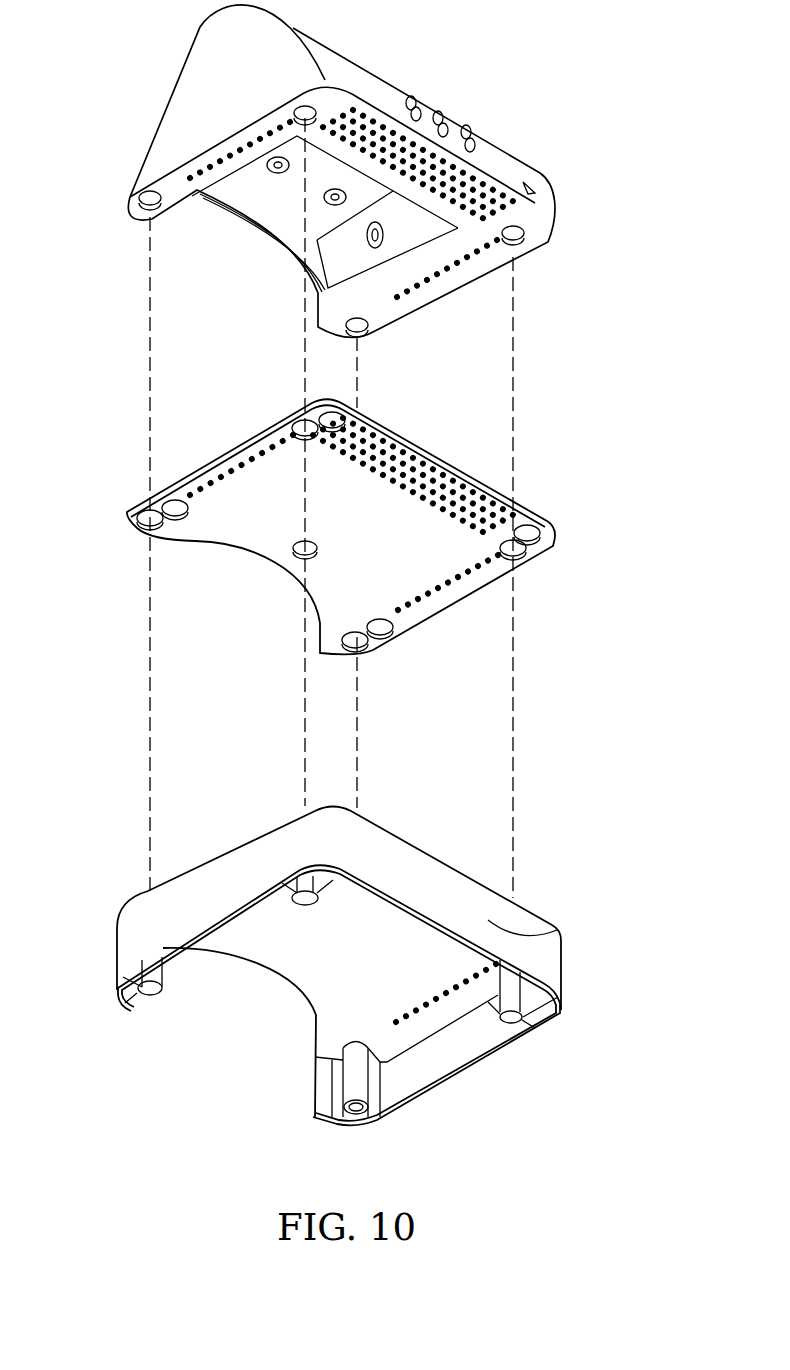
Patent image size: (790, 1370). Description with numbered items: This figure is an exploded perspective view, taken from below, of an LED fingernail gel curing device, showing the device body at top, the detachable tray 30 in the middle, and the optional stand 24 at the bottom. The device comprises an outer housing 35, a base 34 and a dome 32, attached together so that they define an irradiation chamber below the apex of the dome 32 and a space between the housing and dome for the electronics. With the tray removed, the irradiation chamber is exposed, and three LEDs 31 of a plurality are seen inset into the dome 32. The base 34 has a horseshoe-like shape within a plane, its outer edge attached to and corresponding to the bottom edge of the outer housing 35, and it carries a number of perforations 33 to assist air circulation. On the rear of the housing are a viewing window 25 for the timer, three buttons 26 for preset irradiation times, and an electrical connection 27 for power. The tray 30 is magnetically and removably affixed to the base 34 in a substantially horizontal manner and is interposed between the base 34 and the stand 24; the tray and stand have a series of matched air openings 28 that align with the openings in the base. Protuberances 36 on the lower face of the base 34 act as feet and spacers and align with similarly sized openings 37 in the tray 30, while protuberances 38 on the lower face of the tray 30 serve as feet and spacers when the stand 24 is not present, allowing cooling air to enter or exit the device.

The stand 24 is at (557, 930).
The viewing window 25 is at (437, 110).
The buttons 26 is at (477, 147).
The electrical connection 27 is at (533, 190).
The openings 28 is at (485, 505).
The detachable tray 30 is at (348, 526).
The LEDs 31 is at (360, 240).
The dome 32 is at (333, 253).
The perforations 33 is at (308, 92).
The base 34 is at (130, 198).
The outer housing 35 is at (167, 138).
The protuberances 36 is at (517, 235).
The openings 37 is at (138, 518).
The protuberances 38 is at (530, 535).